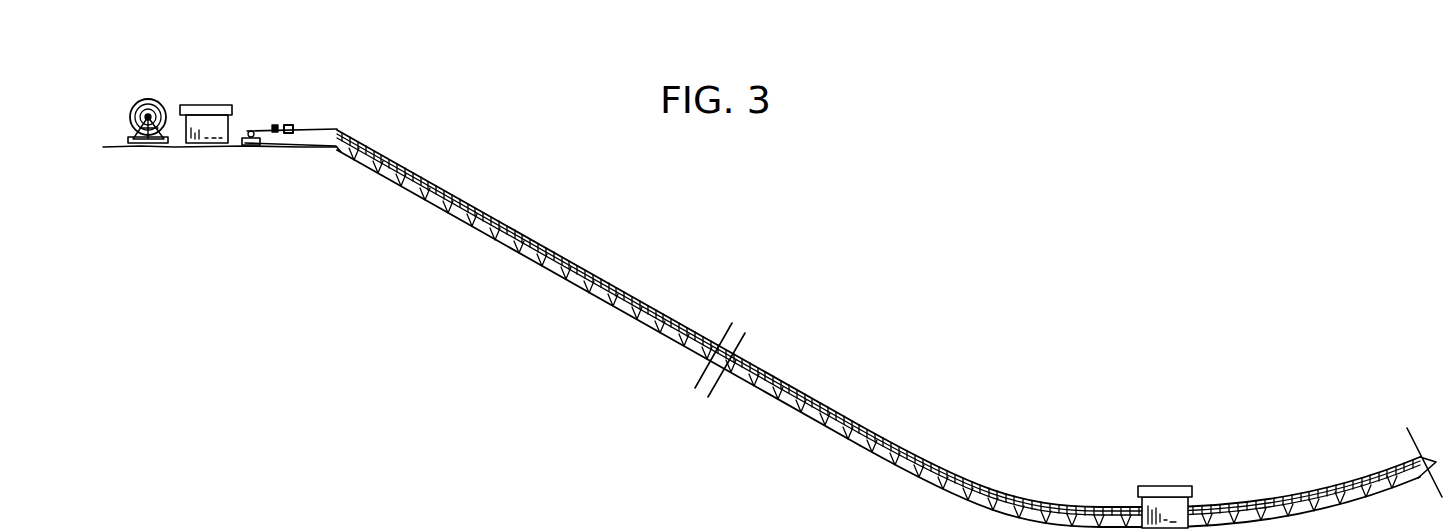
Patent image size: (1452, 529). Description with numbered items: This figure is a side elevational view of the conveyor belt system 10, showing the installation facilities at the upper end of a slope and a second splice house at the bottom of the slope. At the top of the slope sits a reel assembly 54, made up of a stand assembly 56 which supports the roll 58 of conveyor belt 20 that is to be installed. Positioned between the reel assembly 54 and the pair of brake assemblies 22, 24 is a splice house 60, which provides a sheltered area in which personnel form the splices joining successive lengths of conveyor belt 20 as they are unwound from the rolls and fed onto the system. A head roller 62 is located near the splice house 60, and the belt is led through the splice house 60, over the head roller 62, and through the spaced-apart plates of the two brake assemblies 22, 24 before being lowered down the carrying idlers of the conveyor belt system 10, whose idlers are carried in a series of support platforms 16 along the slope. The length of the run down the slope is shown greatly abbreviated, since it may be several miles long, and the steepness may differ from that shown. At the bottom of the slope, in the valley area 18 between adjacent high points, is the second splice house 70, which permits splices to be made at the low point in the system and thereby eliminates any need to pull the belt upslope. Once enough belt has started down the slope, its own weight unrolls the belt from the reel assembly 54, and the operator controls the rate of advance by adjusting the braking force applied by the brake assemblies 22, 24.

The conveyor belt system 10 is at (615, 224).
The support platforms 16 is at (375, 165).
The valley area 18 is at (1101, 478).
The conveyor belt 20 is at (324, 130).
The brake assembly 22 is at (276, 126).
The brake assembly 24 is at (291, 126).
The reel assembly 54 is at (147, 82).
The stand assembly 56 is at (130, 139).
The roll of conveyor belt 58 is at (163, 103).
The splice house 60 is at (211, 115).
The head roller 62 is at (246, 145).
The second splice house 70 is at (1180, 497).